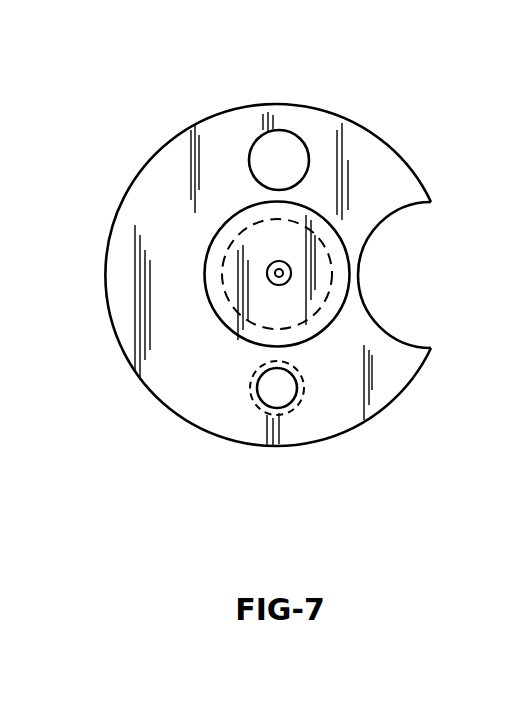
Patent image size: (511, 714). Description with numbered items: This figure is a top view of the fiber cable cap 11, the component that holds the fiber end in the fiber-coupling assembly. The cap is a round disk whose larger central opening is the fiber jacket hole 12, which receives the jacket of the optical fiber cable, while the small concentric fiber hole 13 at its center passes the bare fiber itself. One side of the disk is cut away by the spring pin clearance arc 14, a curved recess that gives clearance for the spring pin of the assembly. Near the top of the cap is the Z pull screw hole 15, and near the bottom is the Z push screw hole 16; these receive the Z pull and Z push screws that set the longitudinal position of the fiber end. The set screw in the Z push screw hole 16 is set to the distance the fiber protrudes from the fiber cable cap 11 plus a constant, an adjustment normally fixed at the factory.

The fiber cable cap 11 is at (357, 120).
The fiber jacket hole 12 is at (333, 228).
The fiber hole 13 is at (270, 270).
The spring pin clearance arc 14 is at (376, 322).
The Z pull screw hole 15 is at (253, 140).
The Z push screw hole 16 is at (295, 407).